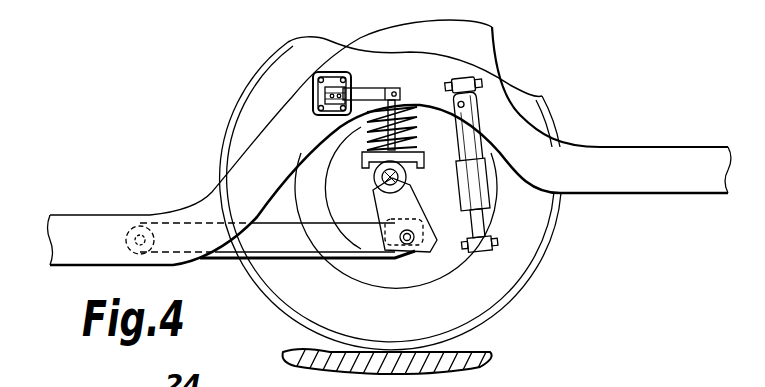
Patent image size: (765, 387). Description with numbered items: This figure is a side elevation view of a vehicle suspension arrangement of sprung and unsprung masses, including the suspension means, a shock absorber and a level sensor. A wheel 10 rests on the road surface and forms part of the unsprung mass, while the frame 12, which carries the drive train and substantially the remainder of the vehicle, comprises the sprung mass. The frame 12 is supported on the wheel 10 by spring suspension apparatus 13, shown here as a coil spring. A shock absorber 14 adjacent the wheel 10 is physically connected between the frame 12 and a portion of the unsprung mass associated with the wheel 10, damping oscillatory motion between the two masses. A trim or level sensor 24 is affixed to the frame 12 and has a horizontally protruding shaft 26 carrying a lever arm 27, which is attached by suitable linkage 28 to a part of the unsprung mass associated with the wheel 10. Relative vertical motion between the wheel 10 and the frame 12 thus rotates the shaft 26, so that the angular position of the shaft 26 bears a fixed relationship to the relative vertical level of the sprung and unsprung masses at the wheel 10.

The wheel 10 is at (510, 278).
The frame 12 is at (218, 207).
The spring suspension apparatus 13 is at (281, 209).
The shock absorber 14 is at (458, 170).
The level sensor 24 is at (303, 70).
The shaft 26 is at (320, 91).
The lever arm 27 is at (373, 92).
The linkage 28 is at (405, 102).